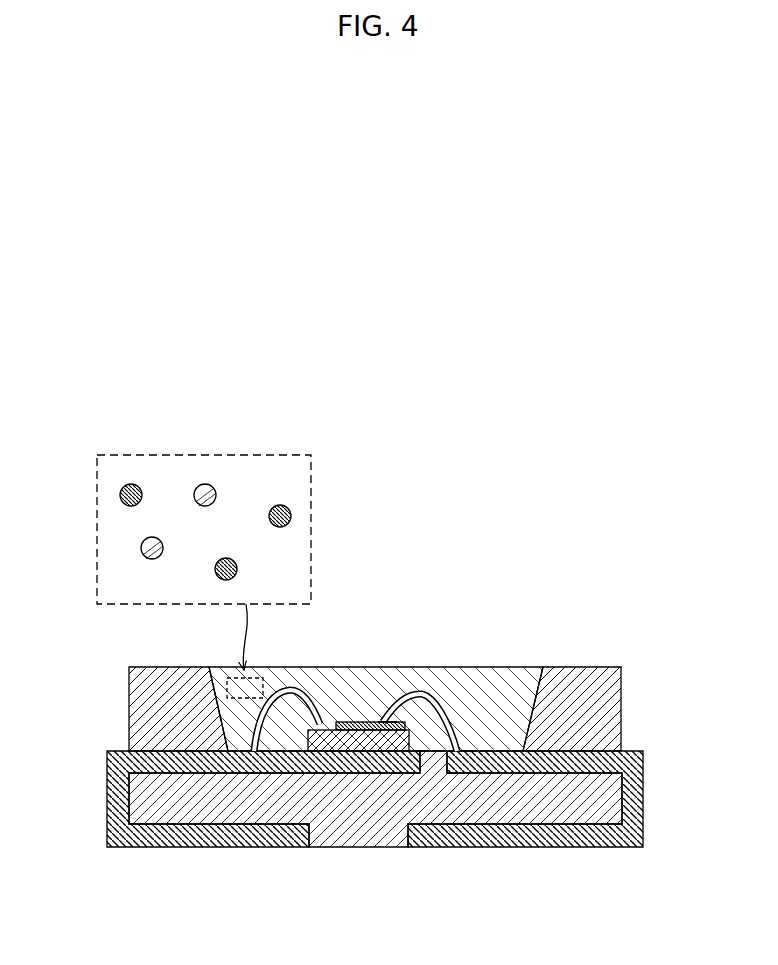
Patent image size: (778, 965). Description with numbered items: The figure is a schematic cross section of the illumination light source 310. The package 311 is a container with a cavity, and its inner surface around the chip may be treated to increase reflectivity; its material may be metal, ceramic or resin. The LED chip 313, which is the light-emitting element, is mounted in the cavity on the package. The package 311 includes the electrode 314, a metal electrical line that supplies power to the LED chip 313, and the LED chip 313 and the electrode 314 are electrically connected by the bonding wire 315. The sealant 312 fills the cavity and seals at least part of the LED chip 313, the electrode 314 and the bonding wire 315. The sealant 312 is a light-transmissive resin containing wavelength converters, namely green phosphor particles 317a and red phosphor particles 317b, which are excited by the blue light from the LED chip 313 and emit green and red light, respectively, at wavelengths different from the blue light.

The illumination light source 310 is at (648, 582).
The package 311 is at (607, 735).
The sealant 312 is at (515, 700).
The LED chip 313 is at (361, 722).
The electrode 314 is at (417, 847).
The bonding wire 315 is at (449, 708).
The green phosphor particles 317a is at (205, 484).
The red phosphor particles 317b is at (120, 492).